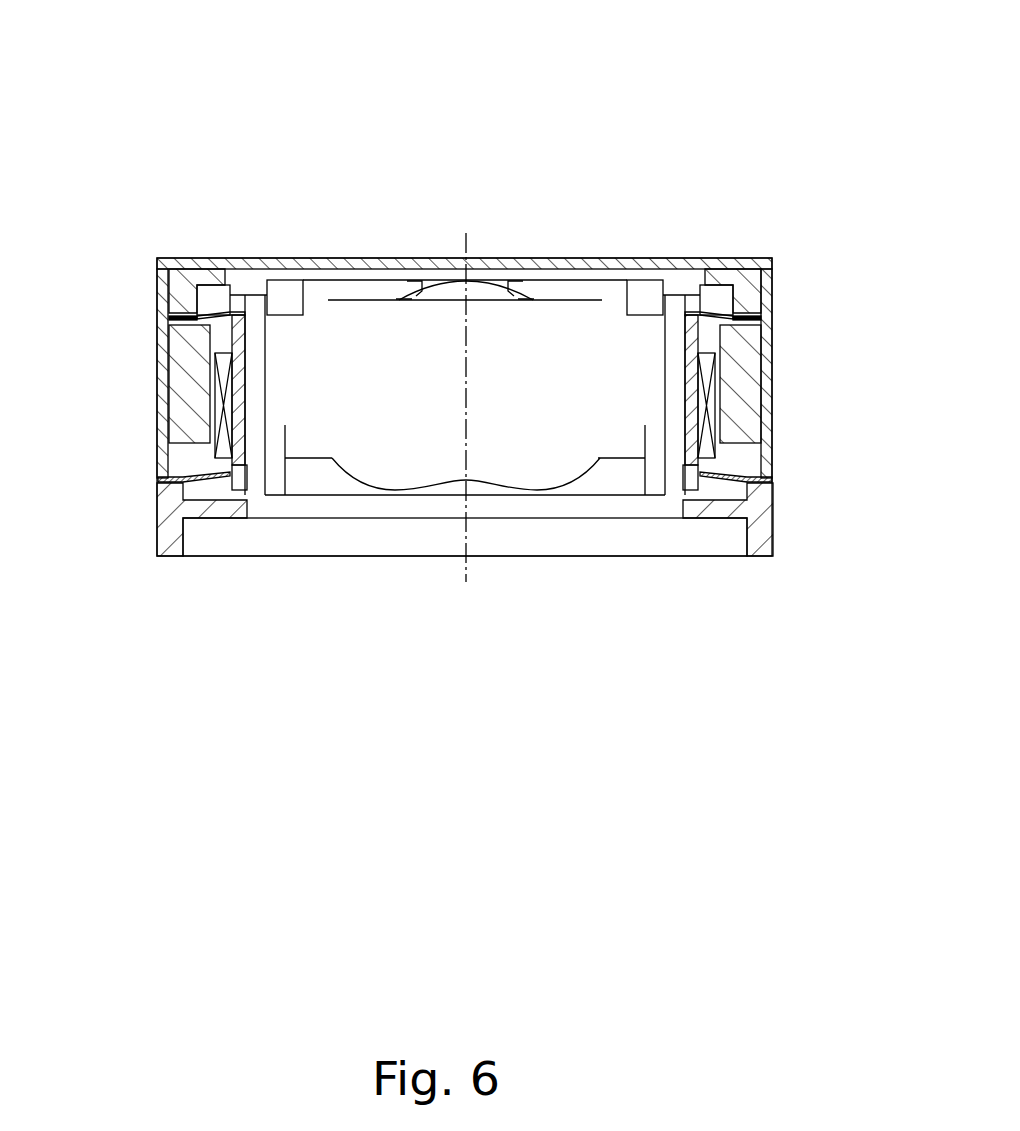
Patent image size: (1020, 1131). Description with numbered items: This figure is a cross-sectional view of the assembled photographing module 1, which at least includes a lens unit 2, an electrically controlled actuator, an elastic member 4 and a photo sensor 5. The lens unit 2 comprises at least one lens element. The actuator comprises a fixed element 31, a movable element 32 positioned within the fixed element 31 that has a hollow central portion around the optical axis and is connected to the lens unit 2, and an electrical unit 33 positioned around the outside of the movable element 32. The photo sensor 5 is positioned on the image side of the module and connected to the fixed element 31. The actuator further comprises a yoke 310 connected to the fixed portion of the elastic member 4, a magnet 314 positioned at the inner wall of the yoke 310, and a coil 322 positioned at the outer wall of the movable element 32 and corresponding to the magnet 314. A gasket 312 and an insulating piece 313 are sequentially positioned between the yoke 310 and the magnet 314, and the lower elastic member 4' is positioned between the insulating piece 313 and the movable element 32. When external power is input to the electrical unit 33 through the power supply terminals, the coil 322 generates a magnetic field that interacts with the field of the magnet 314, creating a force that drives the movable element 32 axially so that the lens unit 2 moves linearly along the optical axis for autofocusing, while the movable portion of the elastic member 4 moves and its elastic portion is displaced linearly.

The photographing module 1 is at (771, 43).
The lens unit 2 is at (480, 290).
The fixed element 31 is at (765, 512).
The yoke 310 is at (165, 287).
The gasket 312 is at (771, 284).
The insulating piece 313 is at (165, 318).
The magnet 314 is at (188, 405).
The movable element 32 is at (770, 320).
The coil 322 is at (767, 407).
The electrical unit 33 is at (740, 345).
The elastic member 4 is at (436, 532).
The lower elastic member 4' is at (466, 257).
The photo sensor 5 is at (272, 530).